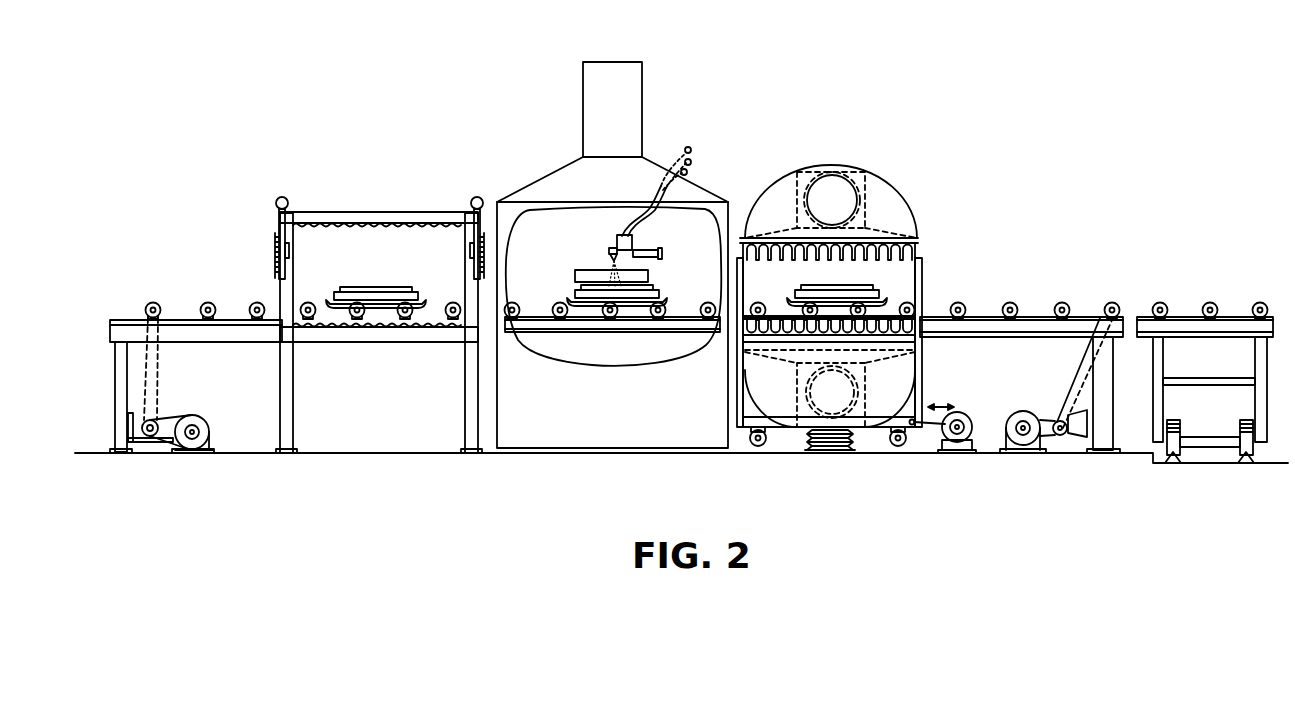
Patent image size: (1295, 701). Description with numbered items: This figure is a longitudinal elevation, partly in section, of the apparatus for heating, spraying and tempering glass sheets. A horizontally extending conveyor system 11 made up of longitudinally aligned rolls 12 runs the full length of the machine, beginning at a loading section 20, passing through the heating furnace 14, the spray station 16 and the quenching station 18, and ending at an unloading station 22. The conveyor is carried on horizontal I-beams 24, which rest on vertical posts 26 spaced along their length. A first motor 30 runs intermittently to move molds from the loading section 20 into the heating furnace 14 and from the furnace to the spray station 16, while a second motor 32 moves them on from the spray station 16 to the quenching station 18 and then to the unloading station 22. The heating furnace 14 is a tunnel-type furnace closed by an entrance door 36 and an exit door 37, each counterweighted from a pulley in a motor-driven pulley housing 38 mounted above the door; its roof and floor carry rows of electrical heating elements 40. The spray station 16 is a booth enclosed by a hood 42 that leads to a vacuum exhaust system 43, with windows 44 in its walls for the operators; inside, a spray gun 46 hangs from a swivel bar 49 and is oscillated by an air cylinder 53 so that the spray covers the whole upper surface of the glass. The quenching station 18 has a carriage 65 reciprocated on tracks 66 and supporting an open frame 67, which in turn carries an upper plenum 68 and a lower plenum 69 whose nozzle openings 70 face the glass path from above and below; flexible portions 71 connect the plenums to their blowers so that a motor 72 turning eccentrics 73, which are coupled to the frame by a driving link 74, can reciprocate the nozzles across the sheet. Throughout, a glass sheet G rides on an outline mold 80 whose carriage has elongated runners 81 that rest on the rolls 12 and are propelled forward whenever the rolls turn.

The conveyor system 11 is at (150, 303).
The rolls 12 is at (205, 301).
The heating furnace 14 is at (360, 300).
The spray station 16 is at (612, 272).
The quenching station 18 is at (871, 329).
The loading section 20 is at (196, 360).
The unloading station 22 is at (1213, 341).
The horizontal I-beams 24 is at (252, 343).
The vertical posts 26 is at (296, 429).
The first motor 30 is at (211, 431).
The second motor 32 is at (1016, 414).
The entrance door 36 is at (276, 254).
The exit door 37 is at (507, 256).
The motor-driven pulley housing 38 is at (285, 197).
The heating elements 40 is at (376, 228).
The hood 42 is at (545, 176).
The vacuum exhaust system 43 is at (644, 108).
The windows 44 is at (573, 277).
The spray gun 46 is at (609, 254).
The swivel bar 49 is at (633, 243).
The air cylinder 53 is at (660, 258).
The carriage 65 is at (776, 420).
The tracks 66 is at (795, 446).
The open frame 67 is at (924, 356).
The upper plenum 68 is at (906, 218).
The lower plenum 69 is at (912, 390).
The nozzle openings 70 is at (784, 318).
The flexible portions 71 is at (860, 438).
The motor 72 is at (961, 412).
The eccentrics 73 is at (958, 442).
The connecting rod 74 is at (930, 429).
The outline mold 80 is at (432, 290).
The runners 81 is at (346, 303).
The glass sheet G is at (374, 284).